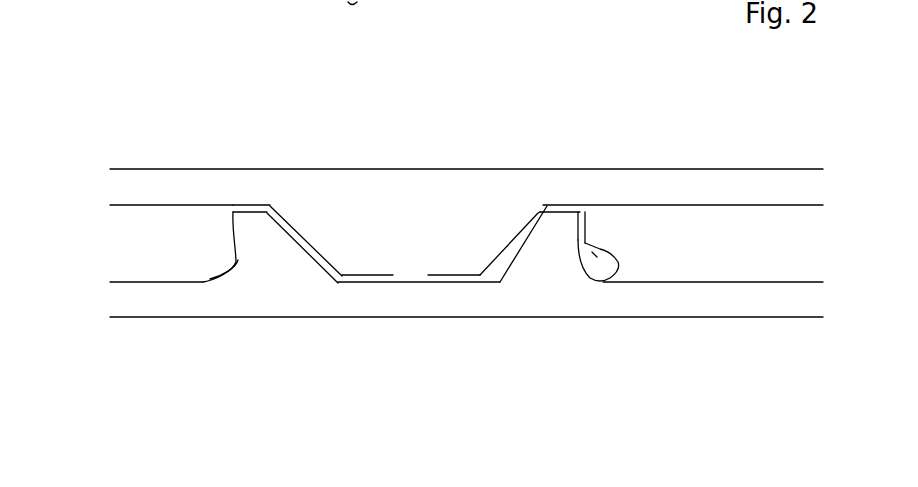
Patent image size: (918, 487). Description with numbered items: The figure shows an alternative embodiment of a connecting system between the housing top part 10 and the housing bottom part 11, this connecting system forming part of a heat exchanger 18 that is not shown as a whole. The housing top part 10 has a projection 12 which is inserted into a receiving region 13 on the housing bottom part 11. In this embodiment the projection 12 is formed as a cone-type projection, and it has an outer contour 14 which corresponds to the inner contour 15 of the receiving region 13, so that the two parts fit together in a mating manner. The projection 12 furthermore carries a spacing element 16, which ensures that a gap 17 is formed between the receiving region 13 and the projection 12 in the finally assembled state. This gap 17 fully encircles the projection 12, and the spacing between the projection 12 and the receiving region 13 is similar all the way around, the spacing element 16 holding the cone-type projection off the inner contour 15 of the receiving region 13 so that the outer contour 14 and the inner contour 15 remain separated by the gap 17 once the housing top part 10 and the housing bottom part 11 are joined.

The heat exchanger 18 is at (126, 146).
The housing top part 10 is at (173, 182).
The housing bottom part 11 is at (180, 297).
The projection 12 is at (413, 268).
The outer contour 14 is at (527, 223).
The gap 17 is at (327, 263).
The spacing element 16 is at (417, 273).
The inner contour 15 is at (500, 263).
The receiving region 13 is at (560, 247).